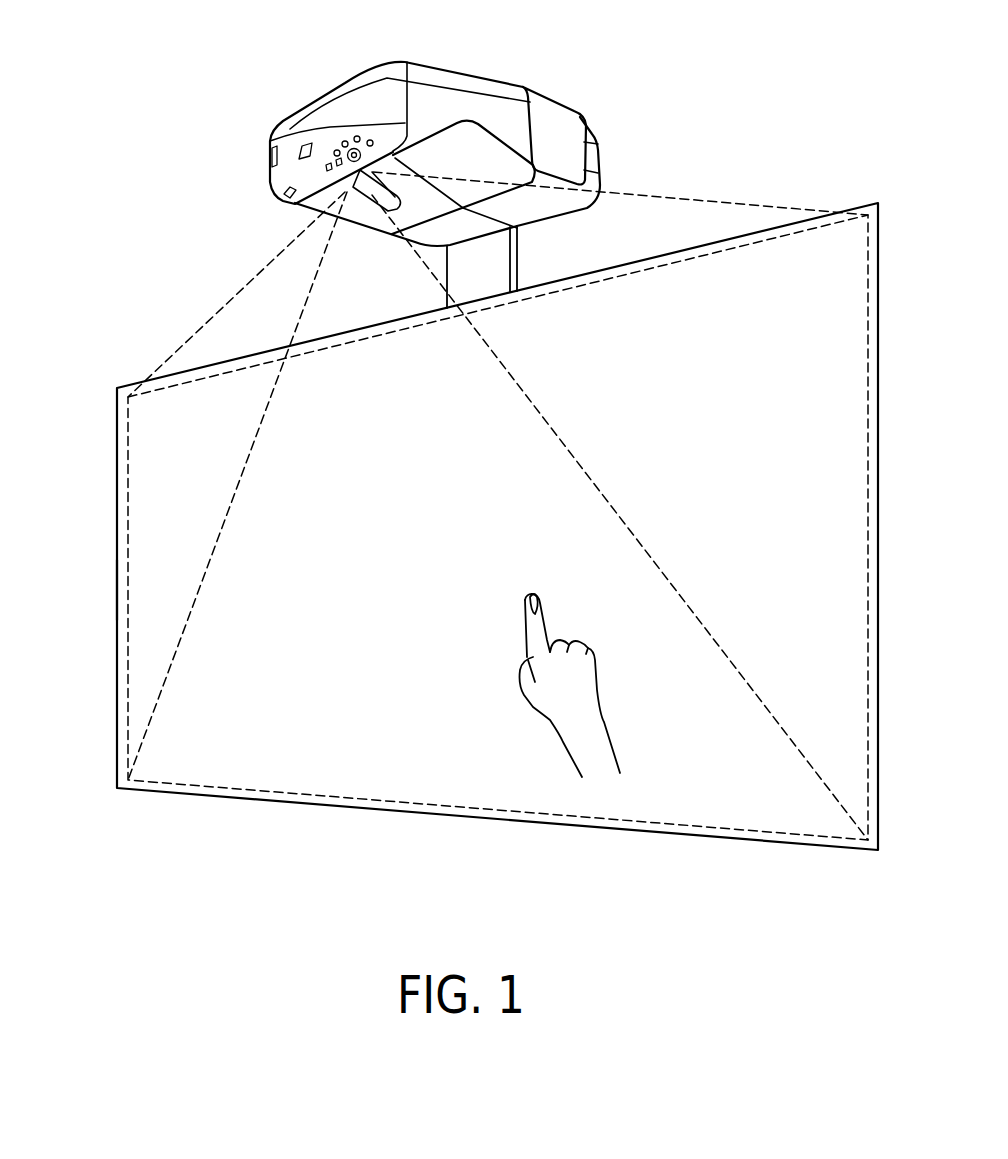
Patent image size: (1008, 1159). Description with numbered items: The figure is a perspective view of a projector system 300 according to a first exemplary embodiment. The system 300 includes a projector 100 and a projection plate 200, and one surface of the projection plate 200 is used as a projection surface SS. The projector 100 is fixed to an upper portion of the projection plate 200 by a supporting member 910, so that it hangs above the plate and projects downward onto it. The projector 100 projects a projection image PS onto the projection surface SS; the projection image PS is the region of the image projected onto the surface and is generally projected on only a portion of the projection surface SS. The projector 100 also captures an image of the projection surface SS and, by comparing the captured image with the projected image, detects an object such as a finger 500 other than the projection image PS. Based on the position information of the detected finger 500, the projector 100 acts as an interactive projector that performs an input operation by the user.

The projector 100 is at (468, 75).
The projection plate 200 is at (858, 203).
The projector system 300 is at (147, 106).
The finger 500 is at (533, 623).
The supporting member 910 is at (518, 256).
The projection image PS is at (128, 450).
The projection surface SS is at (117, 592).